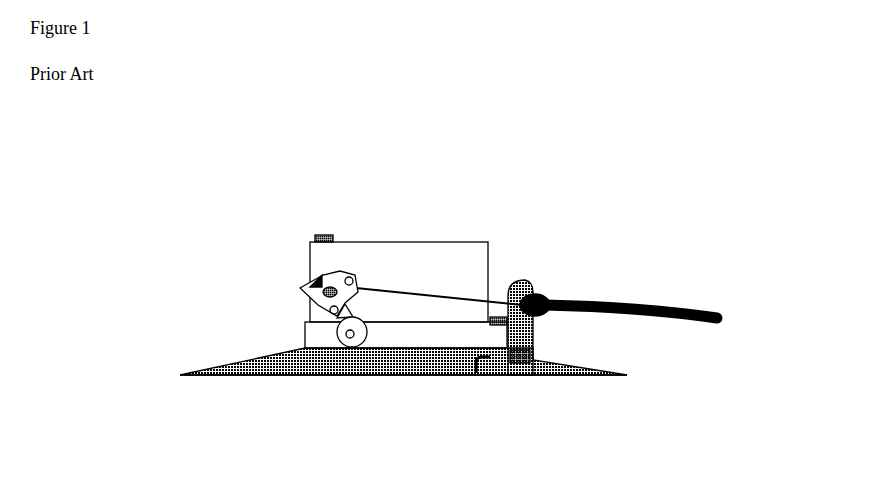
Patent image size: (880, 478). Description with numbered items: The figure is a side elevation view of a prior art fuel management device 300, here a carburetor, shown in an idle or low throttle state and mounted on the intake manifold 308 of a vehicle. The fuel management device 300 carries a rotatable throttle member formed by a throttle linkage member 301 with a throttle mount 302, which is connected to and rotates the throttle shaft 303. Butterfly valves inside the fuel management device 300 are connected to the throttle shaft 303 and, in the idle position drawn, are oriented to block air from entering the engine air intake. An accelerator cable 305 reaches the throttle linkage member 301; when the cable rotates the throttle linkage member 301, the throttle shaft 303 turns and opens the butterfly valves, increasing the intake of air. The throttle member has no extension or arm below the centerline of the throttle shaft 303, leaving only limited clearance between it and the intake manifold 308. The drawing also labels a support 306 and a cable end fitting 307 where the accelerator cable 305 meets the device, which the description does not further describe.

The fuel management device 300 is at (460, 241).
The throttle linkage member 301 is at (368, 316).
The throttle mount 302 is at (332, 343).
The throttle shaft 303 is at (348, 336).
The accelerator cable 305 is at (467, 302).
The pedestal bracket 306 is at (543, 303).
The cable connector 307 is at (537, 287).
The intake manifold 308 is at (260, 358).